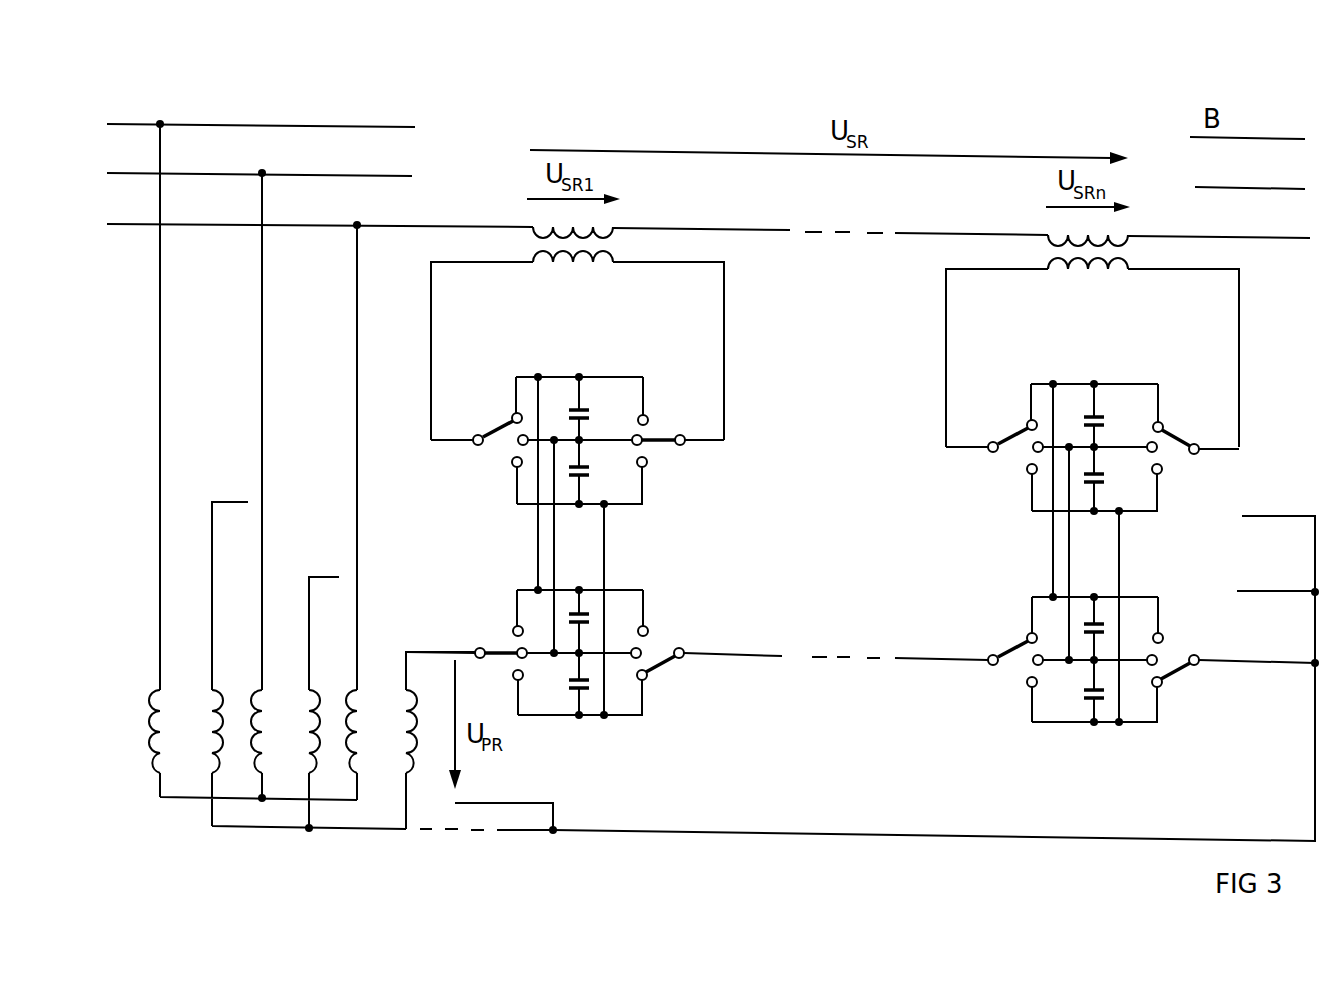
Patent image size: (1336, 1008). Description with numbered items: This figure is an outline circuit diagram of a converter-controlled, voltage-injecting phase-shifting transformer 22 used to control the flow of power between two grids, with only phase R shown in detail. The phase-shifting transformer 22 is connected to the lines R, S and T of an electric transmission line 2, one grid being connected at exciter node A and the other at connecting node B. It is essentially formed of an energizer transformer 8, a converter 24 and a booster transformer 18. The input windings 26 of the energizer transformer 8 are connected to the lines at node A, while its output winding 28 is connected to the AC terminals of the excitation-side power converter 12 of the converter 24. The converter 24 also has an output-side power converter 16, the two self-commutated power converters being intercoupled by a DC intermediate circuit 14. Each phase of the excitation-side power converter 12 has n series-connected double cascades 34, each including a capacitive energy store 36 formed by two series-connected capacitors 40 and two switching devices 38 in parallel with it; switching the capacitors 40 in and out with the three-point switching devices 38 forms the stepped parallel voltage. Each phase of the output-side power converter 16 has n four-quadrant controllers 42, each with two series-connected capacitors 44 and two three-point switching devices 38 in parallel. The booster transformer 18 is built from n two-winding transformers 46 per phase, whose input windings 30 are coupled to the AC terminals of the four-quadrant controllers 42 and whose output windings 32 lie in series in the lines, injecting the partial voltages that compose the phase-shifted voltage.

The electric transmission line 2 is at (364, 125).
The energizer transformer 8 is at (330, 497).
The excitation-side power converter 12 is at (847, 735).
The DC intermediate circuit 14 is at (847, 560).
The output-side power converter 16 is at (847, 387).
The booster transformer 18 is at (774, 224).
The phase-shifting transformer 22 is at (823, 881).
The converter 24 is at (905, 599).
The input windings 26 is at (150, 729).
The output winding 28 is at (202, 717).
The input windings 30 is at (603, 265).
The output windings 32 is at (604, 227).
The double cascade 34 is at (593, 717).
The capacitive energy store 36 is at (838, 662).
The switching device 38 is at (498, 425).
The capacitors 40 is at (590, 612).
The four-quadrant controller 42 is at (837, 528).
The capacitors 44 is at (594, 397).
The two-winding transformer 46 is at (835, 346).